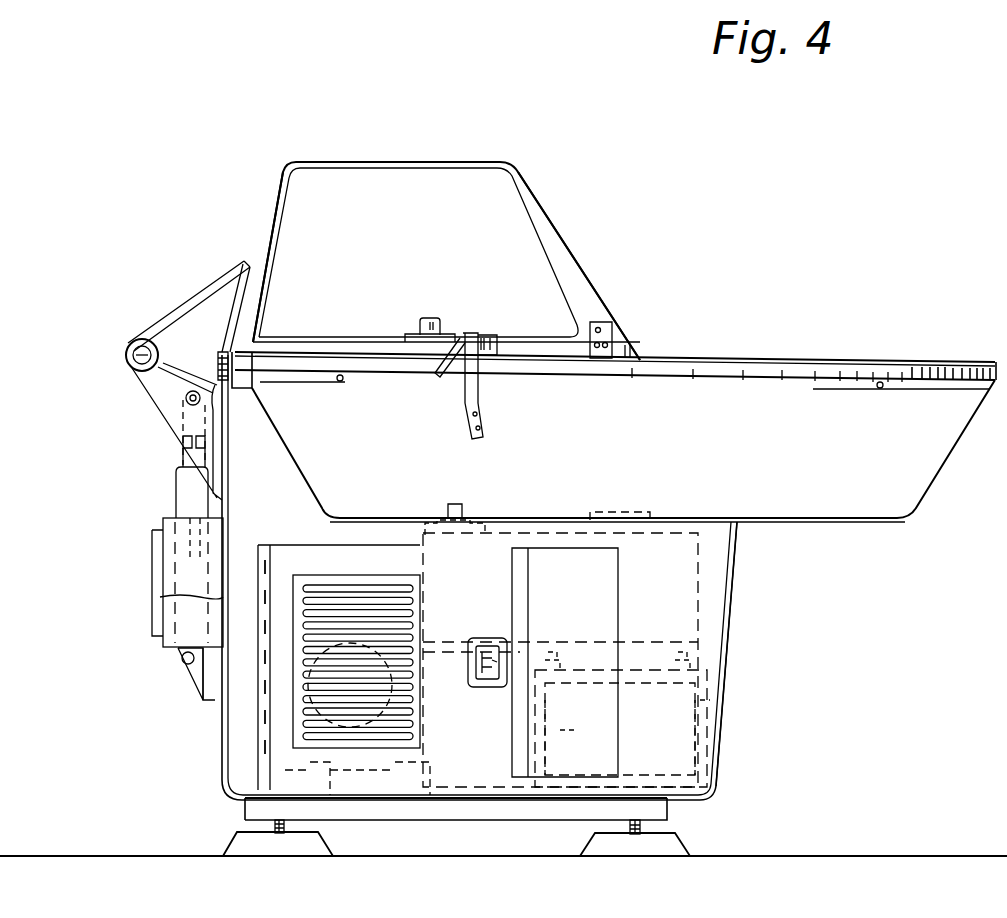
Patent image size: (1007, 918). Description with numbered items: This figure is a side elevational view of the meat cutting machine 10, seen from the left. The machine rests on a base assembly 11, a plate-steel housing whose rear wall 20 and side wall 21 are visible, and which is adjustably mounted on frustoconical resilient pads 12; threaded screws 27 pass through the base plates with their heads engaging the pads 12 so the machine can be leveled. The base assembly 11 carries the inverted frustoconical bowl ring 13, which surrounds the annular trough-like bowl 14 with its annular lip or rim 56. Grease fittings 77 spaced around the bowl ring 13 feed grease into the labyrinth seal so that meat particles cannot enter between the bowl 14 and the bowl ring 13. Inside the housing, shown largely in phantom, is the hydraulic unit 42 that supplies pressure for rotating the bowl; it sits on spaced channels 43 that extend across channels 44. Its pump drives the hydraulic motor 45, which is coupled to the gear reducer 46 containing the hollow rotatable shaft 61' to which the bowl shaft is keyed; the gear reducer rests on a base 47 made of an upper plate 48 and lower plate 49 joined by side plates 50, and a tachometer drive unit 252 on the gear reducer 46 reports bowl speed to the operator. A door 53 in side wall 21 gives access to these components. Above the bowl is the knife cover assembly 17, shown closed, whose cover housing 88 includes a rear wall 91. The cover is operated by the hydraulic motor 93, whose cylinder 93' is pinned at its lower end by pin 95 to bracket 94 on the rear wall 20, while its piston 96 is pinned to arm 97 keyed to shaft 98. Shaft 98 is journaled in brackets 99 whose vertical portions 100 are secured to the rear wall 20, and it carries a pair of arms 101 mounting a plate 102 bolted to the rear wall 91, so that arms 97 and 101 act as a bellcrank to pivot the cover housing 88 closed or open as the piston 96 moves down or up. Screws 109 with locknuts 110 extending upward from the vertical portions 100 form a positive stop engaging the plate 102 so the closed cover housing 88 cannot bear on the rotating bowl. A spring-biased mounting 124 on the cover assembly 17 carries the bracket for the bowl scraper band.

The meat cutting machine 10 is at (774, 200).
The base assembly 11 is at (726, 660).
The frustoconical resilient pads 12 is at (322, 846).
The bowl ring 13 is at (950, 460).
The bowl 14 is at (772, 362).
The cover 17 is at (380, 160).
The rear wall 20 is at (160, 597).
The side wall 21 is at (718, 635).
The threaded screws 27 is at (274, 826).
The hydraulic unit 42 is at (303, 693).
The channels 43 is at (290, 765).
The channels 44 is at (512, 815).
The hydraulic motor 45 is at (515, 705).
The gear reducer 46 is at (716, 585).
The base 47 is at (700, 720).
The upper plate 48 is at (642, 662).
The lower plate 49 is at (655, 757).
The side plates 50 is at (545, 745).
The door 53 is at (603, 570).
The annular lip or rim 56 is at (967, 368).
The hollow rotatable shaft 61' is at (619, 493).
The grease fittings 77 is at (348, 385).
The cover housing 88 is at (530, 178).
The rear wall 91 is at (279, 190).
The hydraulic motor 93 is at (156, 483).
The cylinder 93' is at (152, 530).
The bracket 94 is at (196, 676).
The pin 95 is at (182, 662).
The piston 96 is at (178, 415).
The arm 97 is at (185, 395).
The shaft 98 is at (126, 355).
The brackets 99 is at (178, 430).
The vertical portions 100 is at (225, 450).
The arms 101 is at (200, 300).
The plate 102 is at (247, 292).
The screws 109 is at (215, 358).
The locknuts 110 is at (222, 403).
The mounting 124 is at (440, 298).
The tachometer drive unit 252 is at (456, 500).